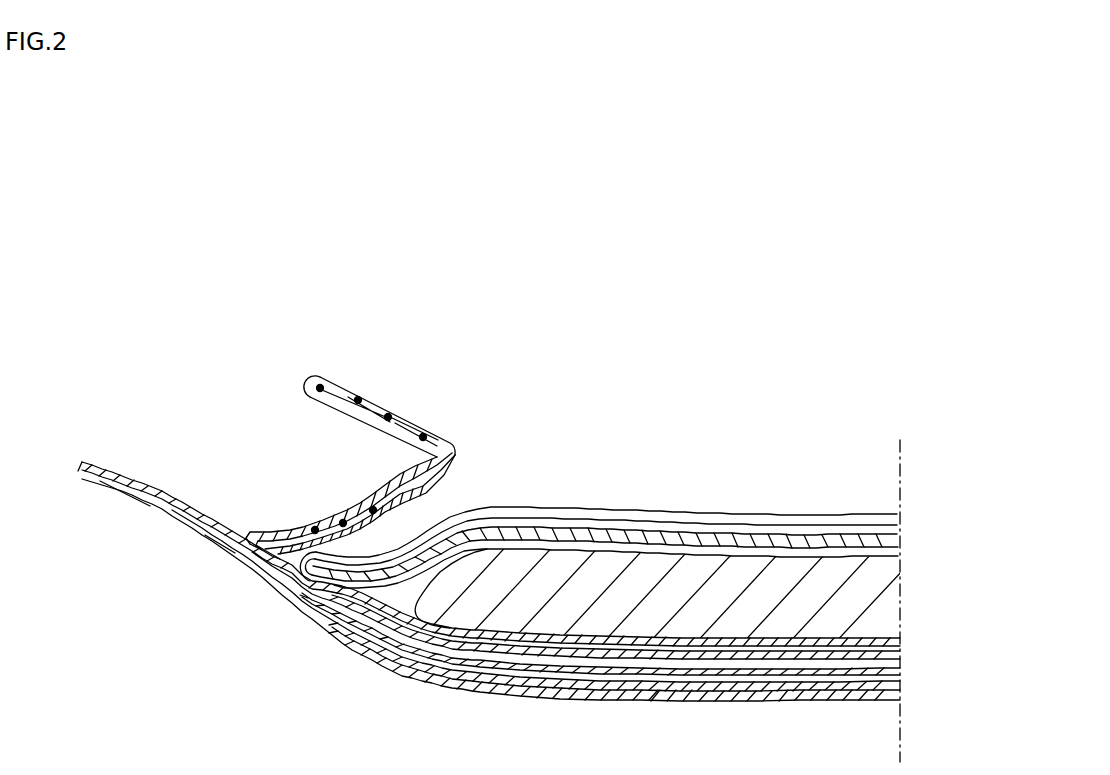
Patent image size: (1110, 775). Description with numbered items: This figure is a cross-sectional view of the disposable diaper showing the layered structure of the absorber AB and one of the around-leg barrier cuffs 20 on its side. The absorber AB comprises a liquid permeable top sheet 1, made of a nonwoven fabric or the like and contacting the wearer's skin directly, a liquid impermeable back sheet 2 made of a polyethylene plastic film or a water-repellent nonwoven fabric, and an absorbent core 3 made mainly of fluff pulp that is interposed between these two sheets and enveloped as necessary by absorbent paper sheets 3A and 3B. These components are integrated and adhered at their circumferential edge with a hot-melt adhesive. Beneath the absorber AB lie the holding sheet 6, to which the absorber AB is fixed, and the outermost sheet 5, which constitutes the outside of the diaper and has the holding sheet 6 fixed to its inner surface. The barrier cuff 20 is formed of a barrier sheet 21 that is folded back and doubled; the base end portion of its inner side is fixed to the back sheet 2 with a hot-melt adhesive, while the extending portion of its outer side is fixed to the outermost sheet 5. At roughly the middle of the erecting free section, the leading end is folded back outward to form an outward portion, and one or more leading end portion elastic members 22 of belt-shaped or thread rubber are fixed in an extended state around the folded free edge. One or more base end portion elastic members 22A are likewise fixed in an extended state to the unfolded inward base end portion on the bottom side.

The top sheet 1 is at (708, 515).
The back sheet 2 is at (732, 670).
The absorbent core 3 is at (770, 630).
The absorbent paper sheet 3A is at (656, 540).
The absorbent paper sheet 3B is at (578, 652).
The outermost sheet 5 is at (678, 698).
The holding sheet 6 is at (635, 683).
The barrier cuff 20 is at (465, 442).
The barrier sheet 21 is at (299, 530).
The leading end portion elastic member 22 is at (357, 398).
The base end portion elastic member 22A is at (342, 521).
The absorber AB is at (826, 486).